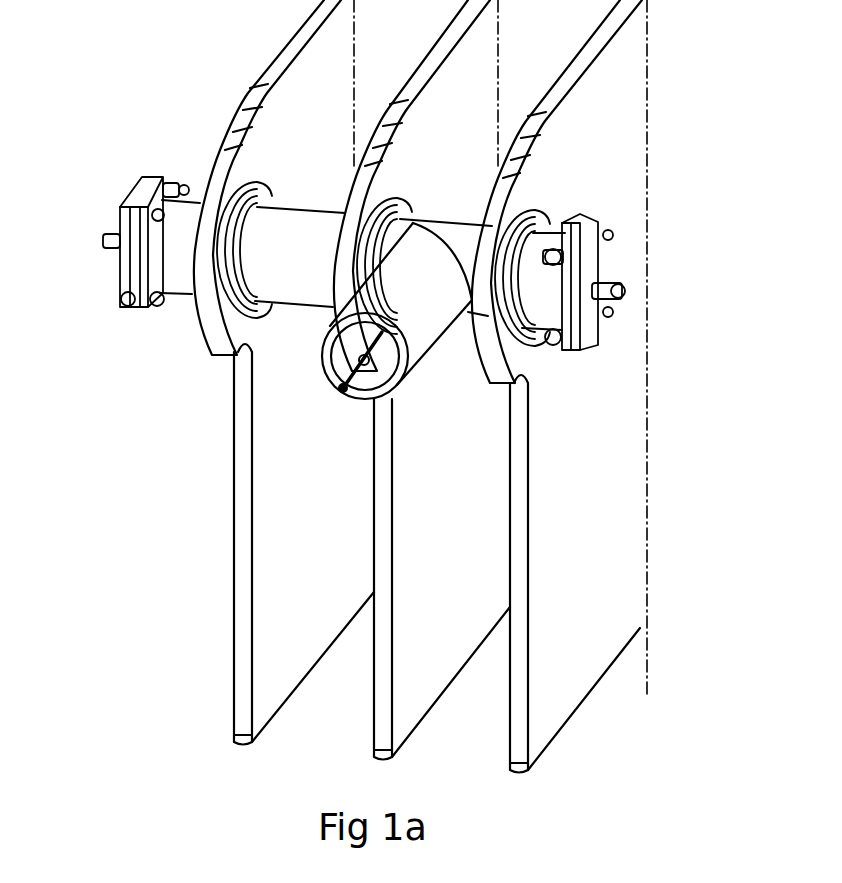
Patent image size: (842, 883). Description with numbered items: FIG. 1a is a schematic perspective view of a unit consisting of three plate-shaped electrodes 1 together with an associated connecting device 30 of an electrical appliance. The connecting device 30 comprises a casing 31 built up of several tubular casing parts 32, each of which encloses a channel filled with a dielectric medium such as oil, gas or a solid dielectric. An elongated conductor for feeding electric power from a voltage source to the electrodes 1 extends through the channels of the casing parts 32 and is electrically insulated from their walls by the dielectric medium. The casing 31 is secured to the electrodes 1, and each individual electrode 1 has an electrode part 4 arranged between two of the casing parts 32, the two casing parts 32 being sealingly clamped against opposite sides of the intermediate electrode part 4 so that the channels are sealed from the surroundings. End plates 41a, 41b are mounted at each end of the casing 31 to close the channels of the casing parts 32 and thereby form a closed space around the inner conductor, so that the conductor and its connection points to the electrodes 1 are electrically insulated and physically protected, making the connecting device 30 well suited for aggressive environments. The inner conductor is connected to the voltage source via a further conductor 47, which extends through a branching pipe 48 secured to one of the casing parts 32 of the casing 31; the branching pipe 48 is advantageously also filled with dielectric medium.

The plate-shaped electrode 1 is at (297, 42).
The electrode part 4 is at (240, 174).
The connecting device 30 is at (381, 386).
The casing 31 is at (283, 319).
The tubular casing part 32 is at (308, 214).
The end plate 41a is at (130, 268).
The end plate 41b is at (602, 268).
The conductor 47 is at (357, 403).
The branching pipe 48 is at (418, 350).